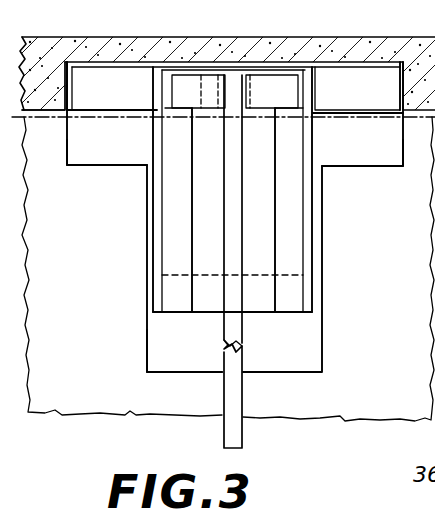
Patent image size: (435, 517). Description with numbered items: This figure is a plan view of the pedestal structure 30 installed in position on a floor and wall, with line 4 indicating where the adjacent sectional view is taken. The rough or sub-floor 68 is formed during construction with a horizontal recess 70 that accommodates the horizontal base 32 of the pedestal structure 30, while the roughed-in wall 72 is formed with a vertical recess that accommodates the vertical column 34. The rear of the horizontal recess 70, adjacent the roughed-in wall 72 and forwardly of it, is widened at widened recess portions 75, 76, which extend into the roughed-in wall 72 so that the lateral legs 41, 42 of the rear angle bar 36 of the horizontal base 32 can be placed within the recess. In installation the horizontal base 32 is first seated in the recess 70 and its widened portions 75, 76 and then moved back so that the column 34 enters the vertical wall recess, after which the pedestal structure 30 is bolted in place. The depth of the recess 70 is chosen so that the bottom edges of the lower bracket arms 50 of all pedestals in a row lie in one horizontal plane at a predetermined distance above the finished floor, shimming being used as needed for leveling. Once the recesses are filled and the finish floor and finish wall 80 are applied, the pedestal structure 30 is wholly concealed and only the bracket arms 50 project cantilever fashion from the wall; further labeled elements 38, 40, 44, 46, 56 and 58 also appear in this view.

The section line 4- 4 is at (201, 75).
The pedestal structure 30 is at (206, 187).
The horizontal base 32 is at (180, 262).
The vertical column 34 is at (272, 92).
The rear angle bar 36 is at (100, 117).
The cylinder wall 38 is at (175, 238).
The housing 40 is at (290, 237).
The lateral leg 41 is at (137, 95).
The lateral leg 42 is at (376, 96).
The cylinder bottom 44 is at (257, 303).
The cover plate 46 is at (222, 72).
The lower bracket arm 50 is at (232, 398).
The fastener 56 is at (212, 97).
The fastener 58 is at (265, 98).
The sub-floor 68 is at (82, 400).
The horizontal recess 70 is at (168, 342).
The roughed-in wall 72 is at (408, 40).
The widened recess portion 75 is at (104, 150).
The widened recess portion 76 is at (358, 153).
The finish wall 80 is at (54, 118).